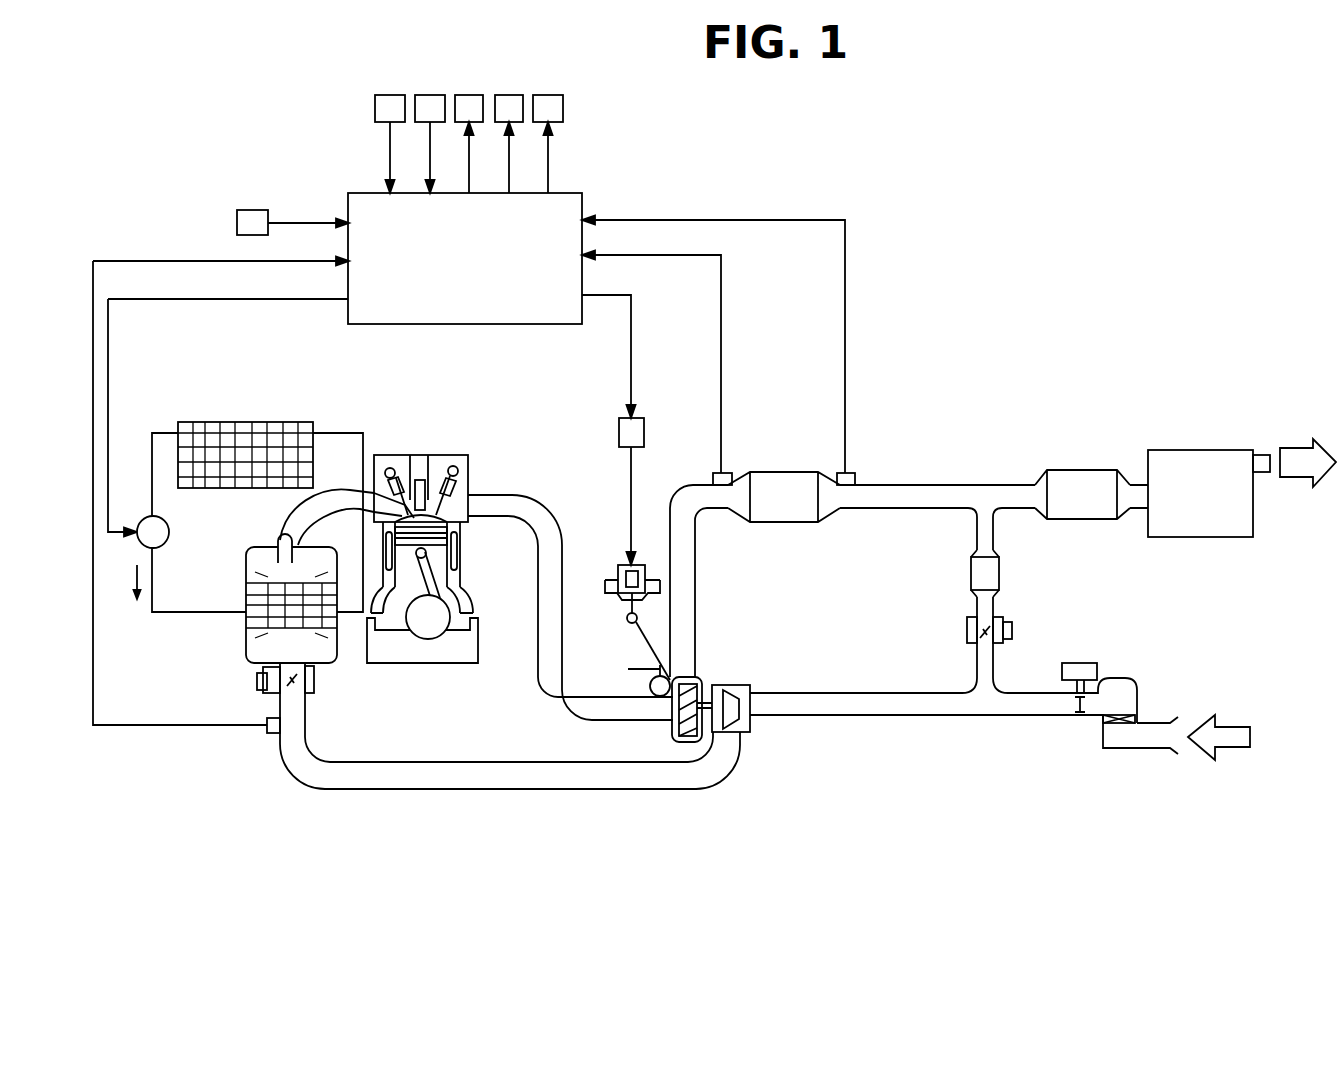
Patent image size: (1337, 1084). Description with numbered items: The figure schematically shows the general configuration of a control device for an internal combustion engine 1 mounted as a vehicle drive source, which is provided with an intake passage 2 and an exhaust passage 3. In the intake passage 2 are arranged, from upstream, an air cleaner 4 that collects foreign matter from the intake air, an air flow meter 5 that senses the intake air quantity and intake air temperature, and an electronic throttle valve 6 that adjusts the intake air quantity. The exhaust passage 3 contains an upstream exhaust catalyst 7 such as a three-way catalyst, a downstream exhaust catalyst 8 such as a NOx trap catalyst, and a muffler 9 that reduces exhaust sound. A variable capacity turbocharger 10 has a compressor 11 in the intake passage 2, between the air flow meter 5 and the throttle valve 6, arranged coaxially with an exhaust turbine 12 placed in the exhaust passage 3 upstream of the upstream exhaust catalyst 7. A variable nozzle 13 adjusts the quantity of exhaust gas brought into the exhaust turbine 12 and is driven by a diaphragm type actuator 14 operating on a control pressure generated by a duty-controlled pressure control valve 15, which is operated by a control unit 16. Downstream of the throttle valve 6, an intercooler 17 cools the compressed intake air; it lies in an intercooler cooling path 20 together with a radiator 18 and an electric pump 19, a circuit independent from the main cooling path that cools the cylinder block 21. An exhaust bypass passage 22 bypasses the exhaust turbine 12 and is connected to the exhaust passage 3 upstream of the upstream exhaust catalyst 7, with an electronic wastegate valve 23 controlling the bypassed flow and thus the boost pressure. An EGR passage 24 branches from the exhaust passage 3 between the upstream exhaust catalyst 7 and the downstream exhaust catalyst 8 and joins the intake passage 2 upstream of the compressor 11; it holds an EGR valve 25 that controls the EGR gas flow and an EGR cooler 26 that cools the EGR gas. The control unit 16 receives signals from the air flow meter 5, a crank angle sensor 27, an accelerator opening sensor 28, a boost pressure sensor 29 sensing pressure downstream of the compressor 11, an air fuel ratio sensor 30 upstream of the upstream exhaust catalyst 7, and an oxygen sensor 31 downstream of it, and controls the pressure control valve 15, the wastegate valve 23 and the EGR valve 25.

The internal combustion engine 1 is at (378, 440).
The intake passage 2 is at (632, 790).
The exhaust passage 3 is at (893, 482).
The air cleaner 4 is at (1138, 716).
The air flow meter 5 is at (237, 222).
The throttle valve 6 is at (476, 95).
The upstream exhaust catalyst 7 is at (783, 470).
The downstream exhaust catalyst 8 is at (1082, 468).
The muffler 9 is at (1196, 448).
The turbocharger 10 is at (763, 666).
The compressor 11 is at (765, 690).
The exhaust turbine 12 is at (720, 685).
The variable nozzle 13 is at (692, 677).
The actuator 14 is at (612, 578).
The pressure control valve 15 is at (619, 437).
The control unit 16 is at (483, 325).
The intercooler 17 is at (245, 640).
The radiator 18 is at (242, 422).
The electric pump 19 is at (165, 548).
The intercooler cooling path 20 is at (158, 420).
The cylinder block 21 is at (478, 612).
The exhaust bypass passage 22 is at (638, 684).
The wastegate valve 23 is at (512, 95).
The EGR passage 24 is at (995, 660).
The EGR valve 25 is at (550, 95).
The EGR cooler 26 is at (970, 573).
The crank angle sensor 27 is at (392, 95).
The accelerator opening sensor 28 is at (432, 95).
The boost pressure sensor 29 is at (272, 735).
The air fuel ratio sensor 30 is at (720, 472).
The oxygen sensor 31 is at (842, 472).